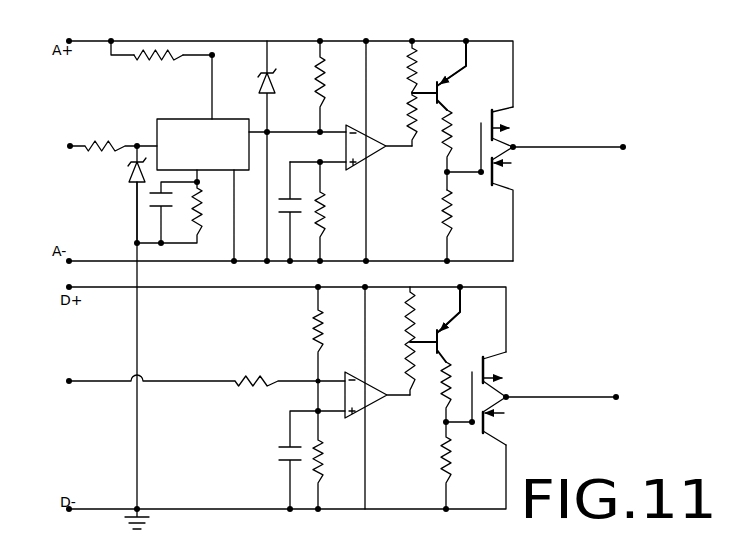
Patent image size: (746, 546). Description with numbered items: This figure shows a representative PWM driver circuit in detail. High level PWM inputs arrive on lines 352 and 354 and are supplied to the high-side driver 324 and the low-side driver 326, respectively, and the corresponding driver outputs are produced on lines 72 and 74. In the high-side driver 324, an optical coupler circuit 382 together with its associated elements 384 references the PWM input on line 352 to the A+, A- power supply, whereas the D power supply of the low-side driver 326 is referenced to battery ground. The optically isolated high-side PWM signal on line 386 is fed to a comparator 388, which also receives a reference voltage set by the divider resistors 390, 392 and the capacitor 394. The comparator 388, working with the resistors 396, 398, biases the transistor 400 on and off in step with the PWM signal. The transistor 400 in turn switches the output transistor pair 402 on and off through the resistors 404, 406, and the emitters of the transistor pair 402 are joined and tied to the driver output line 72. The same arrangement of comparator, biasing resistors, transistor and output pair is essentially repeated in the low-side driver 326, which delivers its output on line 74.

The high-side driver 324 is at (291, 53).
The low-side driver 326 is at (530, 359).
The high-side PWM input line 352 is at (76, 152).
The low-side PWM input line 354 is at (108, 382).
The optical coupler circuit 382 is at (193, 117).
The associated elements 384 is at (139, 126).
The optically isolated high-side PWM driver output line 386 is at (296, 130).
The comparator 388 is at (372, 160).
The divider resistor 390 is at (324, 63).
The divider resistor 392 is at (326, 206).
The capacitor 394 is at (287, 192).
The resistor 396 is at (389, 135).
The resistor 398 is at (418, 105).
The transistor 400 is at (462, 80).
The output transistor pair 402 is at (515, 138).
The resistor 404 is at (452, 150).
The resistor 406 is at (453, 200).
The driver output line 72 is at (582, 150).
The driver output line 74 is at (591, 400).